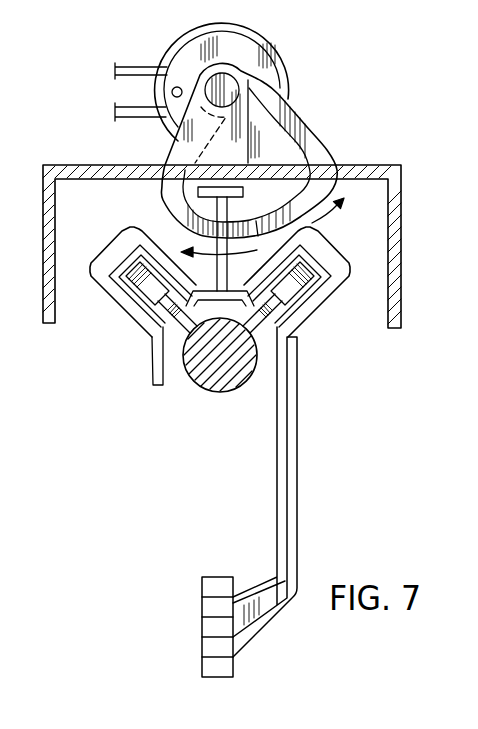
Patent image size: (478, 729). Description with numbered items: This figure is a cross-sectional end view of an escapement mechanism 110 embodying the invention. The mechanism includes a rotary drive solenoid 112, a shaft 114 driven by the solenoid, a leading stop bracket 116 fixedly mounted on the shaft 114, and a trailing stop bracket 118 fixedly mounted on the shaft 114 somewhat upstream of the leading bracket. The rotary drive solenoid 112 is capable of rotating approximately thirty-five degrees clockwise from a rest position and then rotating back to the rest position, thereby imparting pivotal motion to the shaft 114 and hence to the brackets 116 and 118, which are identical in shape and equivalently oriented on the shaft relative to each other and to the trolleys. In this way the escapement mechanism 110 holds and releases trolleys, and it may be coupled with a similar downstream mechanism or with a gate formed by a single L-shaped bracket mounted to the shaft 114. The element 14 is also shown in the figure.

The lever arm 14 is at (298, 425).
The escapement mechanism 110 is at (341, 117).
The rotary drive solenoid 112 is at (277, 50).
The shaft 114 is at (231, 100).
The leading stop bracket 116 is at (168, 198).
The trailing stop bracket 118 is at (320, 167).